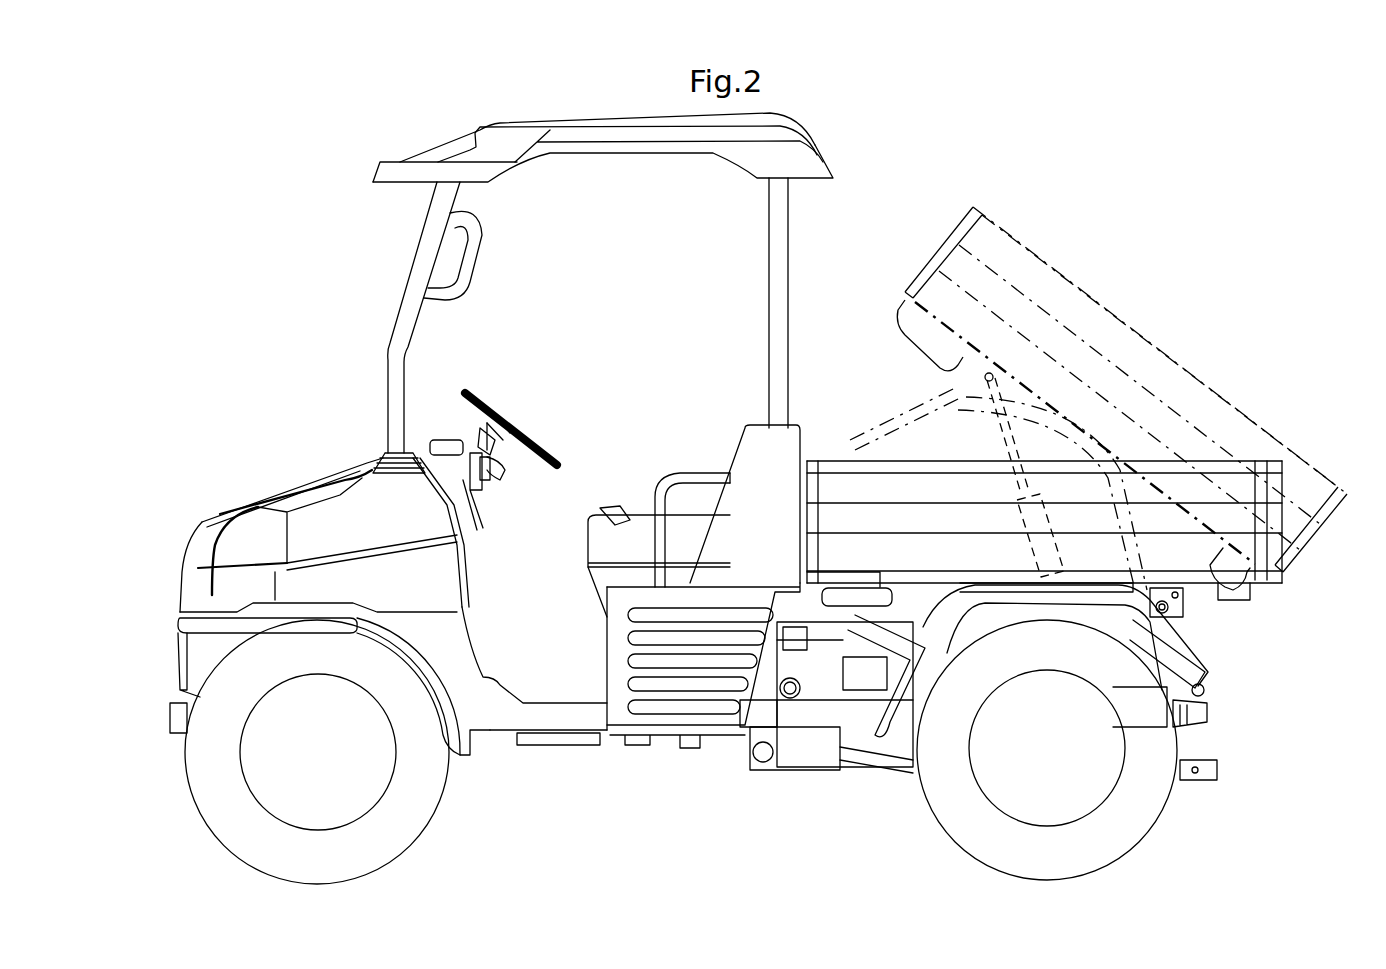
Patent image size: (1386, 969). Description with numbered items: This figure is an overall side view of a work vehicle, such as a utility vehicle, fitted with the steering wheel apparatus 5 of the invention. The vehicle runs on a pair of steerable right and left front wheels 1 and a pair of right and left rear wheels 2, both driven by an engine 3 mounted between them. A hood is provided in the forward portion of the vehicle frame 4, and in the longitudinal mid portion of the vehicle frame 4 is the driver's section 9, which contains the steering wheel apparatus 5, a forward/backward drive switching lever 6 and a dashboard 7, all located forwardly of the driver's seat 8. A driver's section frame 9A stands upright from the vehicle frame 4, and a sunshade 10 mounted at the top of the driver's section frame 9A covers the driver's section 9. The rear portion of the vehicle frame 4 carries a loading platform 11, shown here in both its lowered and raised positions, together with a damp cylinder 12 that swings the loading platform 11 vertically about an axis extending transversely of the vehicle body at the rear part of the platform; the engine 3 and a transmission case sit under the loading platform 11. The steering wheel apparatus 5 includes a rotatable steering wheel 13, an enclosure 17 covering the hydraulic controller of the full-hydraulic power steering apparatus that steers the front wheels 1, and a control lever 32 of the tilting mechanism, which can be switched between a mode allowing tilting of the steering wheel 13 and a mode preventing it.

The front wheels 1 is at (423, 817).
The rear wheels 2 is at (952, 827).
The engine 3 is at (823, 697).
The vehicle frame 4 is at (923, 590).
The steering wheel apparatus 5 is at (540, 410).
The forward/backward drive switching lever 6 is at (483, 470).
The dashboard 7 is at (450, 440).
The driver's seat 8 is at (598, 512).
The driver's section 9 is at (442, 332).
The driver's section frame 9A is at (427, 245).
The sunshade 10 is at (820, 158).
The loading platform 11 is at (1195, 443).
The damp cylinder 12 is at (1020, 516).
The steering wheel 13 is at (483, 405).
The enclosure 17 is at (507, 467).
The control lever 32 is at (503, 453).